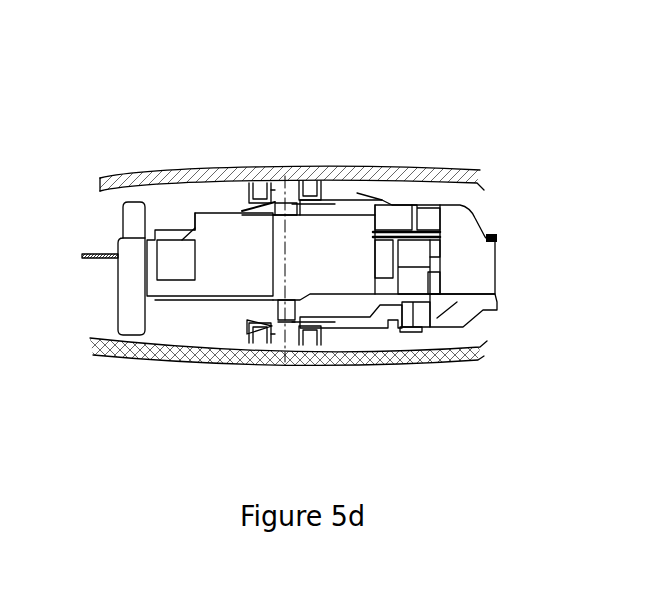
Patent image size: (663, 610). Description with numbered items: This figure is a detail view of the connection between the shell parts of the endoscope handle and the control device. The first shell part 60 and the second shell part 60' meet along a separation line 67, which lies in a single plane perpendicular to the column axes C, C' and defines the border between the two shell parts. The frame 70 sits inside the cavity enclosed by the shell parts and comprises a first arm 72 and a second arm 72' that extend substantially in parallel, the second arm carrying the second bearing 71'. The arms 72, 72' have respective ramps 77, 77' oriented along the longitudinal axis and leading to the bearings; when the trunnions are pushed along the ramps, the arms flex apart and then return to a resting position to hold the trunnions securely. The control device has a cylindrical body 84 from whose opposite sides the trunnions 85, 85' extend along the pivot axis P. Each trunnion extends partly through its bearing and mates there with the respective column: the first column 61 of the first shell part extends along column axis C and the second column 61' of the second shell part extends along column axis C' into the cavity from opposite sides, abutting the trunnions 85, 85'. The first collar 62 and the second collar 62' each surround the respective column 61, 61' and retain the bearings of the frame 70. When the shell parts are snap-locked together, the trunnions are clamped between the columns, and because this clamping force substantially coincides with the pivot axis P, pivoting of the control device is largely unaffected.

The first shell part 60 is at (283, 397).
The second shell part 60' is at (295, 126).
The first column 61 is at (155, 277).
The second column 61' is at (385, 195).
The first collar 62 is at (313, 383).
The second collar 62' is at (262, 123).
The separation line 67 is at (97, 250).
The frame 70 is at (393, 322).
The second bearing 71' is at (362, 157).
The first arm 72 is at (365, 368).
The second arm 72' is at (365, 160).
The ramp 77 is at (216, 382).
The ramp 77' is at (193, 128).
The cylindrical body 84 is at (205, 212).
The trunnion 85 is at (355, 398).
The trunnion 85' is at (151, 241).
The column axis C is at (253, 400).
The column axis C' is at (250, 140).
The pivot axis P is at (313, 240).